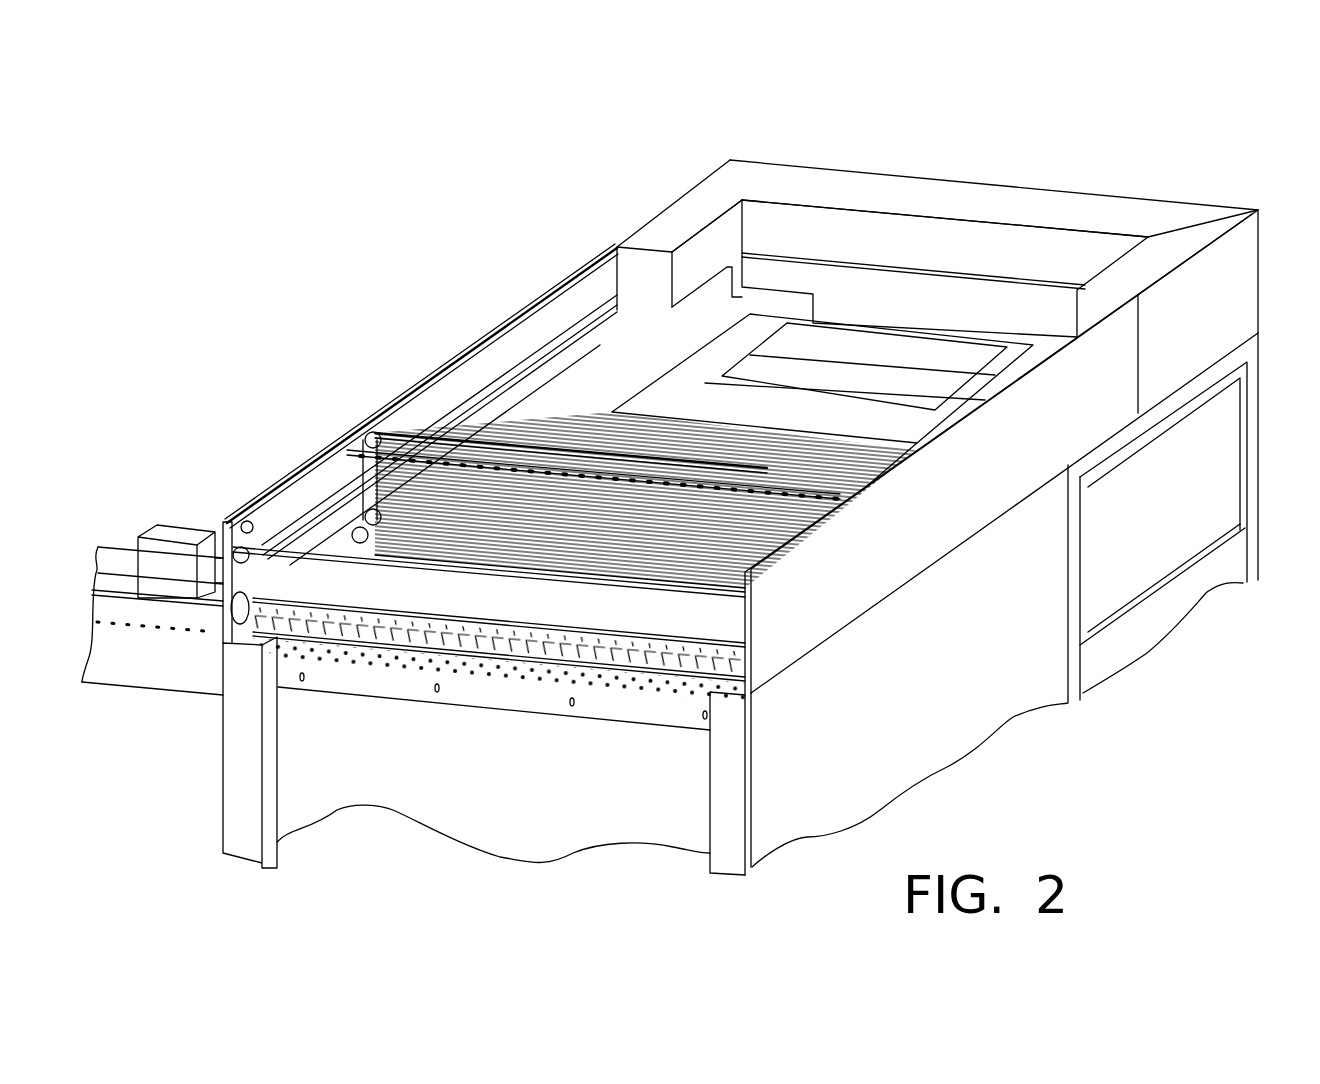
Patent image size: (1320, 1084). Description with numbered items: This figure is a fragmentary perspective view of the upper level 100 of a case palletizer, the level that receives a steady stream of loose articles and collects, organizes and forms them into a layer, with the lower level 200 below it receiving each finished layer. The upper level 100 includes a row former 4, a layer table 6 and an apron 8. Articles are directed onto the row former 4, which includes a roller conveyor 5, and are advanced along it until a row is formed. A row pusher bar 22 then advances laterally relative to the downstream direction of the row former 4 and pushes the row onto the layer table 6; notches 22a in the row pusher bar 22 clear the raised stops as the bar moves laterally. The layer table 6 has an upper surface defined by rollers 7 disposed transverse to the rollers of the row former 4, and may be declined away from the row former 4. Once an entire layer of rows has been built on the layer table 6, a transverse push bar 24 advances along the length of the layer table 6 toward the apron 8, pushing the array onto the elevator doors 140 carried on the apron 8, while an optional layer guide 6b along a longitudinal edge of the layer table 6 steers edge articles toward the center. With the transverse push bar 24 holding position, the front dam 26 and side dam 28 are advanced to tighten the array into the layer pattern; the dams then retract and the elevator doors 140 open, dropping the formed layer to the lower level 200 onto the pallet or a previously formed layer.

The upper level 100 is at (1172, 124).
The apron 8 is at (1010, 176).
The front dam 26 is at (1092, 256).
The side dam 28 is at (707, 310).
The elevator doors 140 is at (826, 348).
The row former 4 is at (256, 492).
The roller conveyor 5 is at (578, 692).
The layer table 6 is at (464, 337).
The layer guide 6b is at (583, 373).
The rollers 7 is at (700, 555).
The row pusher bar 22 is at (347, 453).
The notches 22a is at (423, 450).
The transverse push bar 24 is at (372, 418).
The lower level 200 is at (1192, 554).